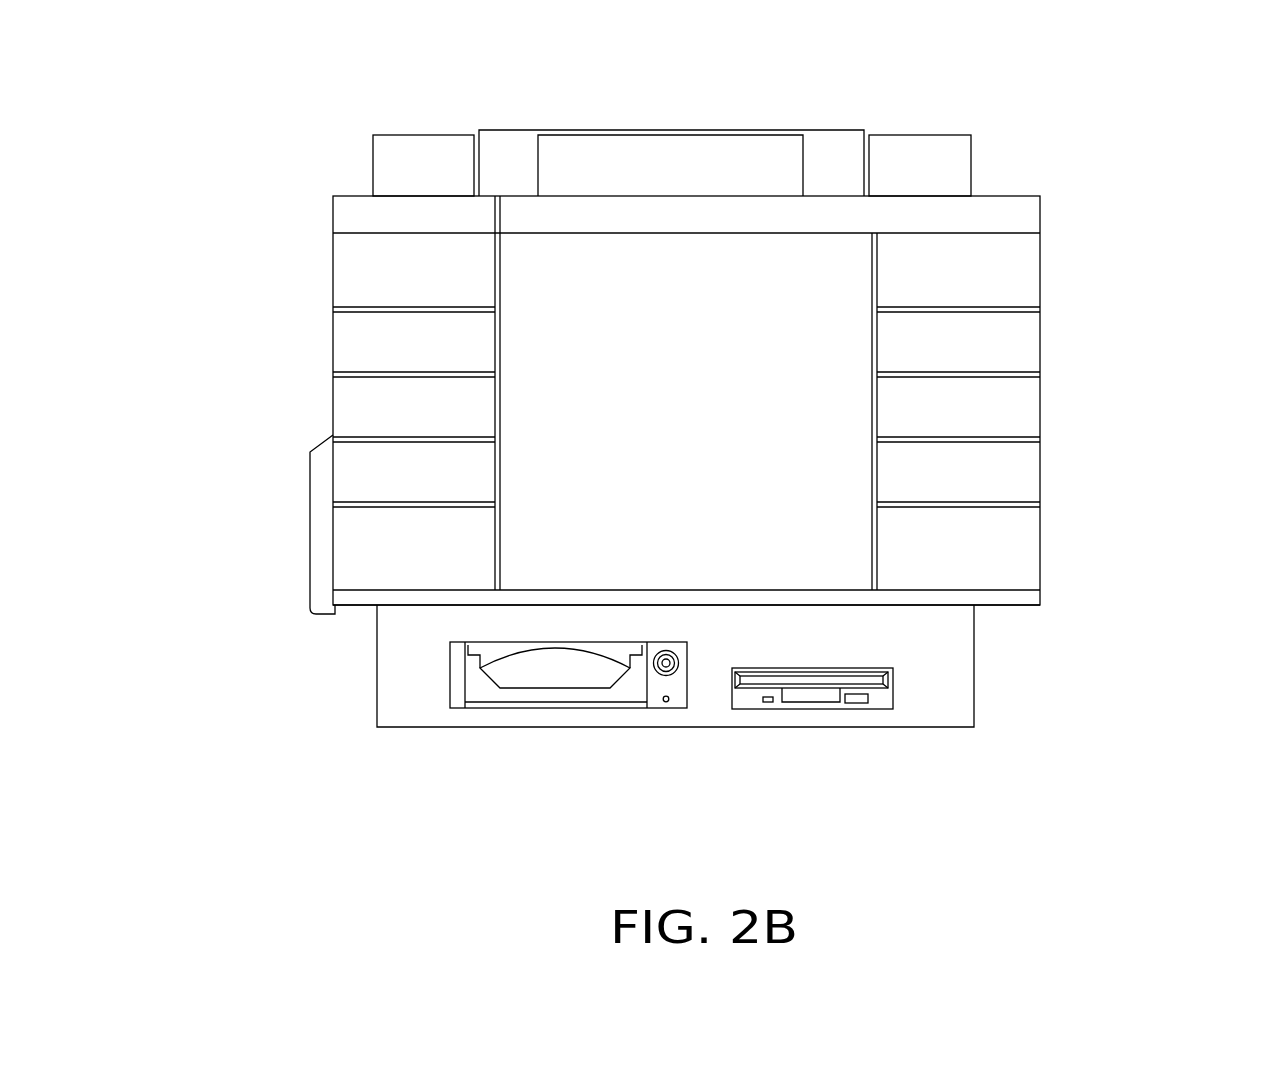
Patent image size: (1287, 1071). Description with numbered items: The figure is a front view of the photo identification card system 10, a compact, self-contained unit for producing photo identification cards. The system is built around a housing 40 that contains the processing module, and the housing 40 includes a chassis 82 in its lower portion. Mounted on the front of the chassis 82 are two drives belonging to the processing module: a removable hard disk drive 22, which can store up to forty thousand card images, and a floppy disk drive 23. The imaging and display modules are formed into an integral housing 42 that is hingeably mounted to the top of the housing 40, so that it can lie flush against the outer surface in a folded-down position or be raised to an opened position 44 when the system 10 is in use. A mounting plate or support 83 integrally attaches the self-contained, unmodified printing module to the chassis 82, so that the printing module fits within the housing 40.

The photo identification card system 10 is at (697, 425).
The housing 40 is at (332, 282).
The integral housing 42 is at (705, 167).
The opened position 44 is at (507, 128).
The mounting plate or support 83 is at (1023, 597).
The chassis 82 is at (750, 709).
The hard disk drive 22 is at (505, 700).
The floppy disk drive 23 is at (794, 697).